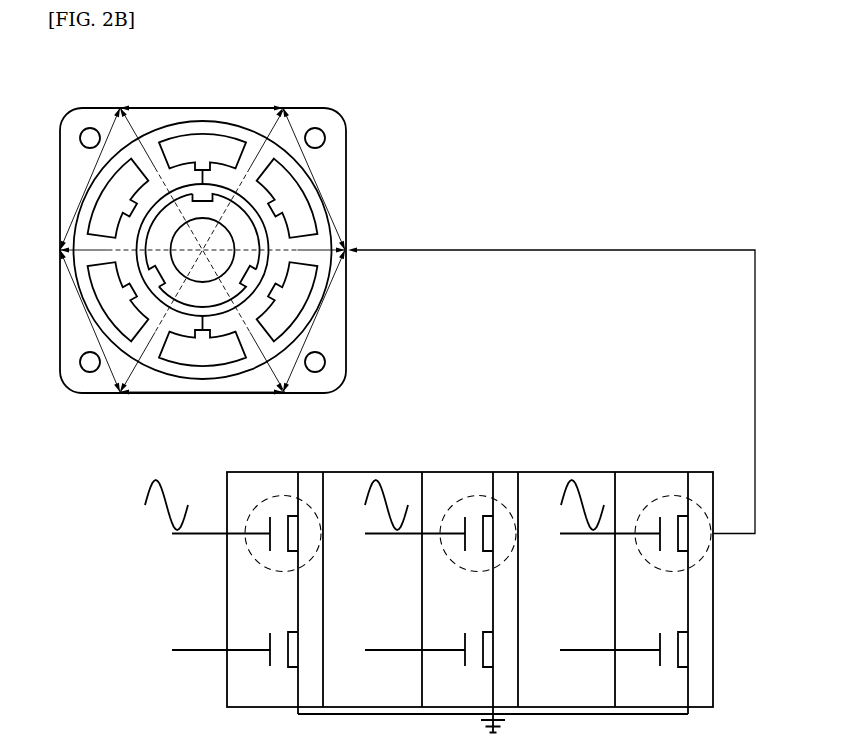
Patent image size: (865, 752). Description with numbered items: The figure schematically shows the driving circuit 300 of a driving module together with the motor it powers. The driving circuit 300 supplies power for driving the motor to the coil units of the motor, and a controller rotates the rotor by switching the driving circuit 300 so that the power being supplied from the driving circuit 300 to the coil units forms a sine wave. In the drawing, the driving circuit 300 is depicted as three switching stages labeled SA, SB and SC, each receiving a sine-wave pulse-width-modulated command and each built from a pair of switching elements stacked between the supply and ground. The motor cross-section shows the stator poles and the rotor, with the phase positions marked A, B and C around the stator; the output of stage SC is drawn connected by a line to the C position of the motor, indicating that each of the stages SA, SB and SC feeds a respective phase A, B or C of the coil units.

The driving circuit 300 is at (463, 490).
The phase A switching element SA is at (246, 574).
The phase B switching element SB is at (440, 570).
The phase C switching element SC is at (635, 574).
The phase A winding slot A is at (204, 251).
The phase B winding slot B is at (203, 251).
The phase C winding slot C is at (205, 251).